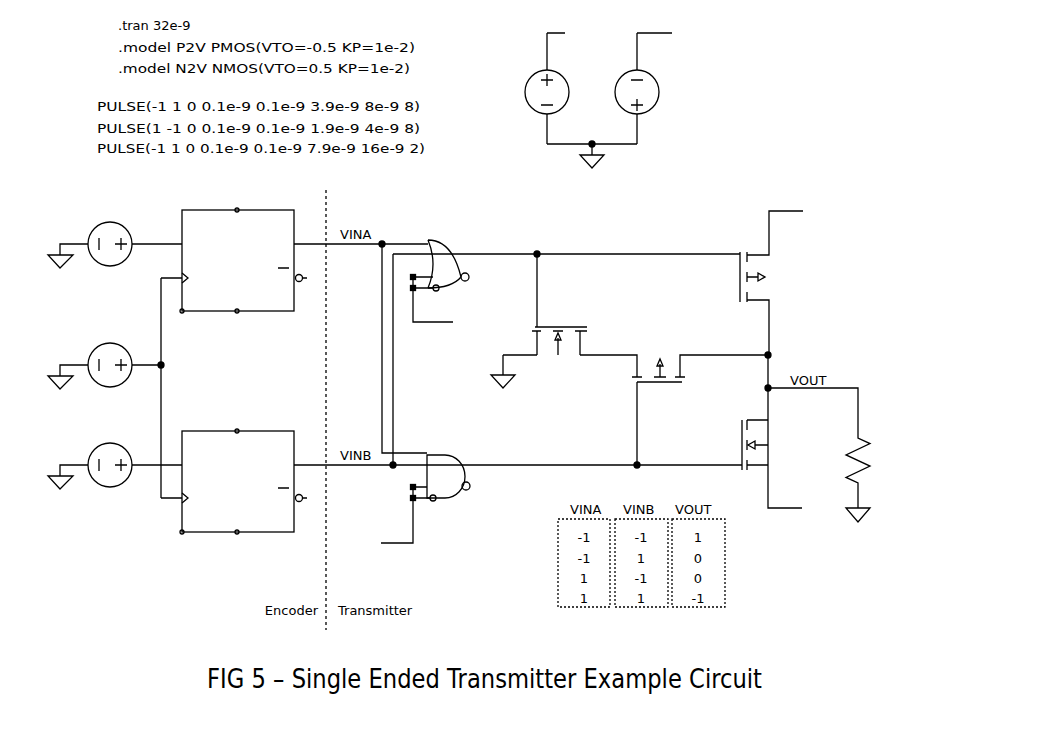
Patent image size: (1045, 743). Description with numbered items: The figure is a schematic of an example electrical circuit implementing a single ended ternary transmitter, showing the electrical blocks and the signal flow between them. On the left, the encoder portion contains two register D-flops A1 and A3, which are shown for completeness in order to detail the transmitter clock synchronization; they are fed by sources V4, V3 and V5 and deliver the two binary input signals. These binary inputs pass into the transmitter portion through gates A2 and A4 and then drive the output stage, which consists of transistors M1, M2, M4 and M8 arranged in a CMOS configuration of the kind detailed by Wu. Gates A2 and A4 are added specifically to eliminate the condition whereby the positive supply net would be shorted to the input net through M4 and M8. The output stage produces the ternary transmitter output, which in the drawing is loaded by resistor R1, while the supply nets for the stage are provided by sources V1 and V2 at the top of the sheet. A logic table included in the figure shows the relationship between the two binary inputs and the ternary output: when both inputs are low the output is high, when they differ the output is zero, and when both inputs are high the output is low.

The positive supply voltage source V1P V1 is at (552, 81).
The negative supply voltage source V1N V2 is at (637, 81).
The pulse voltage source (data input to flip-flop A3) V3 is at (115, 459).
The pulse voltage source (data input to flip-flop A1) V4 is at (115, 238).
The clock pulse voltage source V5 is at (104, 359).
The register D-flop A1 is at (247, 281).
The register D-flop A3 is at (247, 502).
The gate A2 is at (465, 272).
The gate A4 is at (435, 492).
The output stage transistor M1 is at (674, 392).
The output stage transistor M2 is at (539, 322).
The output stage transistor M4 is at (772, 431).
The output stage transistor M8 is at (771, 276).
The load resistor 1e3 R1 is at (833, 455).